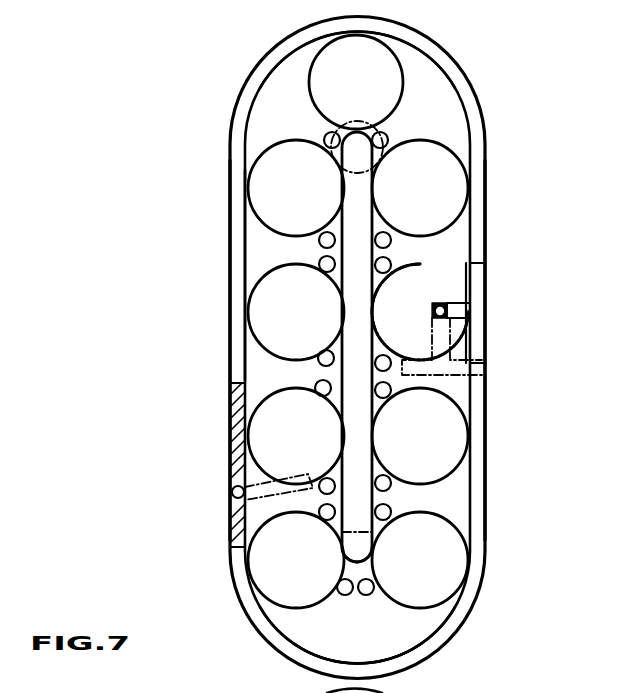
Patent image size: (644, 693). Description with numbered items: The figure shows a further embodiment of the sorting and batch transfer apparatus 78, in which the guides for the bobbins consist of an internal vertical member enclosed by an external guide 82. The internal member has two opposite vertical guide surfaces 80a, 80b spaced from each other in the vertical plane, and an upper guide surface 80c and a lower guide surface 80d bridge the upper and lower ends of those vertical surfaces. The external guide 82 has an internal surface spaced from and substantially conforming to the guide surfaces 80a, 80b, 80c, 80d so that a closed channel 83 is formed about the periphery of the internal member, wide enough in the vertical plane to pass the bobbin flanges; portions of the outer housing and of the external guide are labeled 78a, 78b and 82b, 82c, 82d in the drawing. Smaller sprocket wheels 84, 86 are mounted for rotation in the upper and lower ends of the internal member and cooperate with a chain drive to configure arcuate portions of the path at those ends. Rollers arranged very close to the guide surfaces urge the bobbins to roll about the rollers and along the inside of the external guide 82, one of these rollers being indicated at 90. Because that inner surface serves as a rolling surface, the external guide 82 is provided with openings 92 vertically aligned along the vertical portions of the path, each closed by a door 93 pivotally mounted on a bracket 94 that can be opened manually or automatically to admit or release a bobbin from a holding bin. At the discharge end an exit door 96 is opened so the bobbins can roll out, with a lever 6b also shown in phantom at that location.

The sorting and batch transfer apparatus 78 is at (163, 103).
The right side wall 78a is at (538, 113).
The left side wall 78b is at (176, 158).
The external guide 82 is at (240, 230).
The inner left wall portion 82b is at (236, 210).
The inner top wall portion 82c is at (288, 50).
The inner bottom wall portion 82d is at (290, 656).
The closed channel 83 is at (377, 638).
The sprocket wheel 84 is at (367, 118).
The sprocket wheel 86 is at (345, 537).
The vertical guide surface 80a is at (393, 245).
The vertical guide surface 80b is at (320, 248).
The upper guide surface 80c is at (340, 152).
The lower guide surface 80d is at (353, 593).
The guide roller 90 is at (397, 489).
The opening 92 is at (478, 332).
The door 93 is at (448, 379).
The bracket 94 is at (450, 293).
The exit door 96 is at (232, 428).
The lever 6b is at (233, 518).